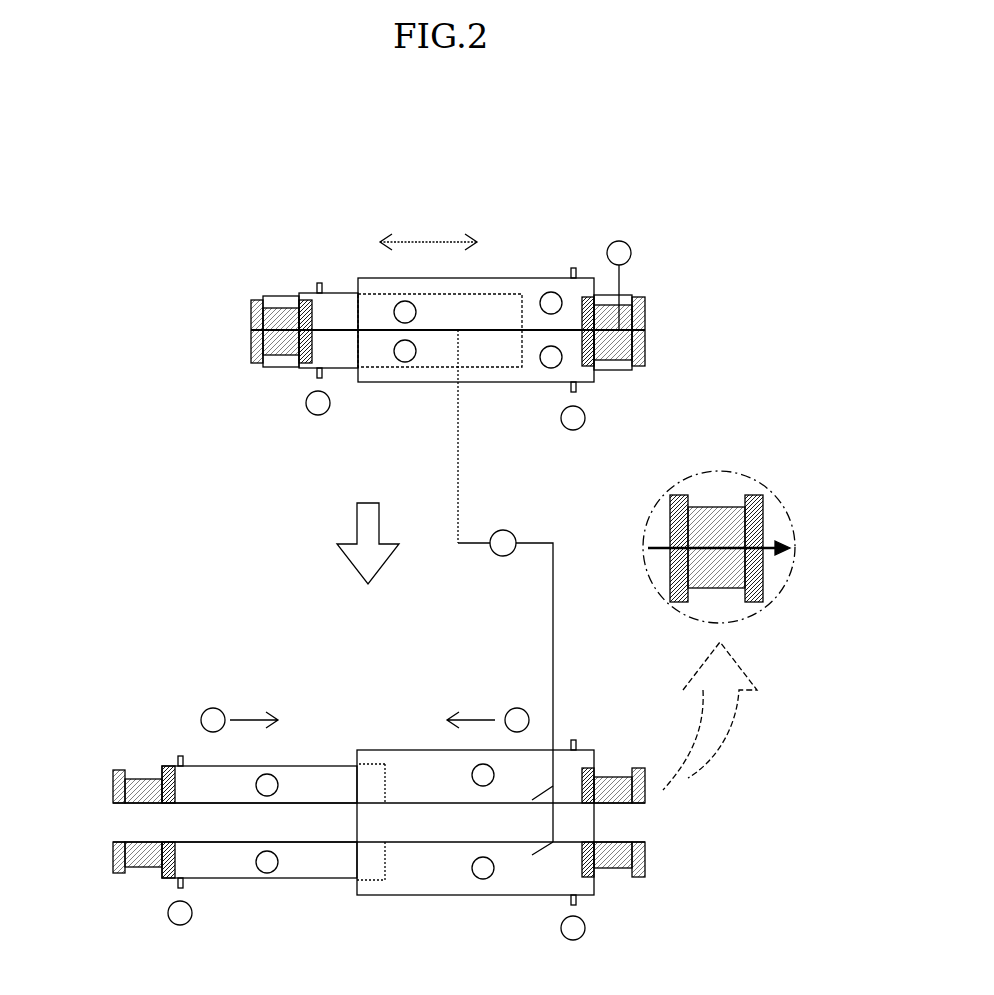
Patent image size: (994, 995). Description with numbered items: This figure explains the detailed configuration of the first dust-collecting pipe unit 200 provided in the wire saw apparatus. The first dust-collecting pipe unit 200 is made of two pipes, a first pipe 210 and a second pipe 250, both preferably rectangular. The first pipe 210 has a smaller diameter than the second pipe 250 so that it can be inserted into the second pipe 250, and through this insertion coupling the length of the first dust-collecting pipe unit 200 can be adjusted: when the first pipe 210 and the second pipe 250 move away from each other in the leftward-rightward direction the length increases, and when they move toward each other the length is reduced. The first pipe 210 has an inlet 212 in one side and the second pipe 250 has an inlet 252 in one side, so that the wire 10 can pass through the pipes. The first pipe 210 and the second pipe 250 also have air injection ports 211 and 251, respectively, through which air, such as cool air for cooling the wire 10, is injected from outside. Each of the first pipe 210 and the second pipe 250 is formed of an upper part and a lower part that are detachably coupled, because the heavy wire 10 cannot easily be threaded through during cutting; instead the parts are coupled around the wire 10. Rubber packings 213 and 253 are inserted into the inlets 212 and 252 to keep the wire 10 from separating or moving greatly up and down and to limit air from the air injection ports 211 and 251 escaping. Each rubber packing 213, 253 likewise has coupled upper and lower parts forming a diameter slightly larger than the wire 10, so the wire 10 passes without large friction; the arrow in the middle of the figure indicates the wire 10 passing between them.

The first dust-collecting pipe unit 200 is at (548, 155).
The wire 10 is at (503, 330).
The first pipe 210 is at (338, 293).
The air injection port 211 is at (323, 377).
The inlet 212 is at (280, 296).
The rubber packing 213 is at (253, 355).
The second pipe 250 is at (556, 278).
The air injection port 251 is at (578, 390).
The inlet 252 is at (628, 295).
The rubber packing 253 is at (645, 306).